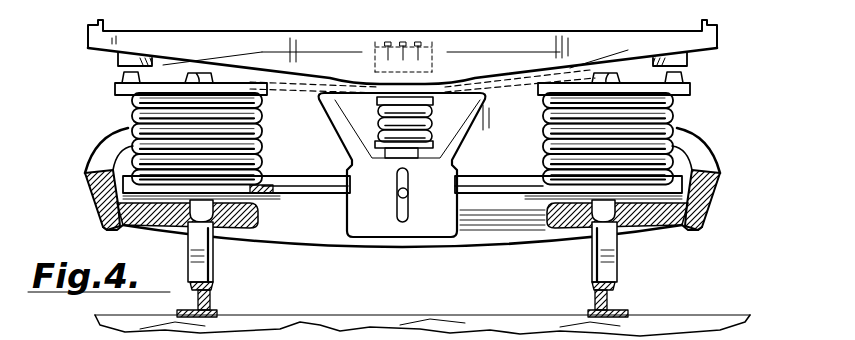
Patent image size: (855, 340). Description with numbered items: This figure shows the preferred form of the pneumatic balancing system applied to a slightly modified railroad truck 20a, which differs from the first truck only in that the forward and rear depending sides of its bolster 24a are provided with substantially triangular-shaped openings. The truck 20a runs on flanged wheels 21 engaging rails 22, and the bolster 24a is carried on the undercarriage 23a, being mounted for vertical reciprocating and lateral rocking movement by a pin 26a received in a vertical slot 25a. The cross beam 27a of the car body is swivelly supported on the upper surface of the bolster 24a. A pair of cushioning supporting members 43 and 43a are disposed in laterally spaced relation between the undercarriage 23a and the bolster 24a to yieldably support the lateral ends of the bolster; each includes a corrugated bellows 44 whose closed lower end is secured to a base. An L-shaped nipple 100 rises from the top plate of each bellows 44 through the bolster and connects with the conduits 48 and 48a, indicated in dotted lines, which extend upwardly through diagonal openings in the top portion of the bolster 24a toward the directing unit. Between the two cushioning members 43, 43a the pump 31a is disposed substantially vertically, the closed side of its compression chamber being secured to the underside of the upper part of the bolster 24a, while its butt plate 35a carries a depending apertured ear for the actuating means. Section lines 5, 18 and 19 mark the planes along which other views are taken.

The section line 5- 5 is at (445, 47).
The section line 18- 18 is at (66, 105).
The section line 19- 19 is at (792, 18).
The L-shaped nipple 100 is at (402, 52).
The cross beam 27a is at (422, 78).
The conduit 48 is at (402, 80).
The conduit 48a is at (269, 157).
The cushioning supporting member 43 is at (682, 121).
The cushioning supporting member 43a is at (131, 128).
The bellows 44 is at (264, 164).
The bolster 24a is at (464, 150).
The pump 31a is at (377, 113).
The butt plate 35a is at (414, 141).
The hole 25a is at (399, 209).
The slot 26a is at (408, 196).
The base plate 23a is at (305, 236).
The truck 20a is at (727, 201).
The flanged wheels 21 is at (214, 270).
The rails 22 is at (211, 302).